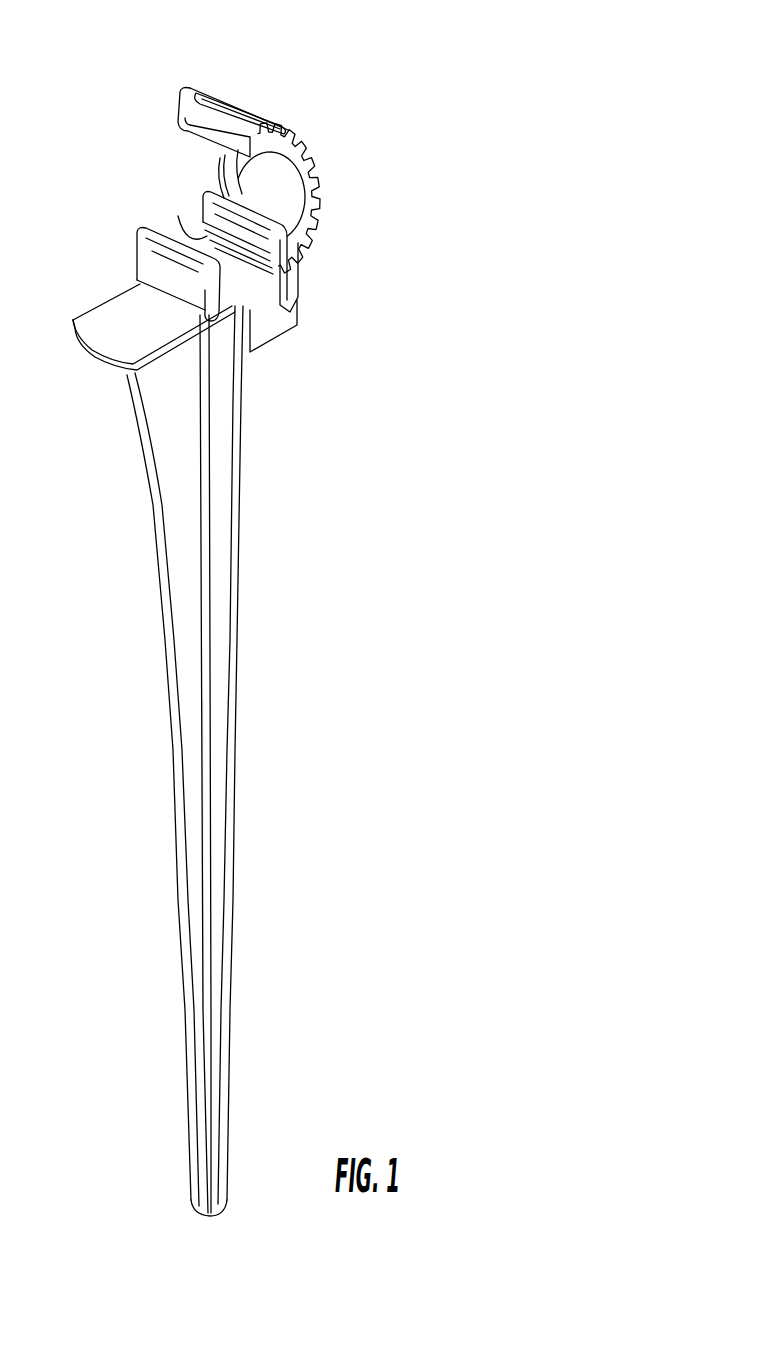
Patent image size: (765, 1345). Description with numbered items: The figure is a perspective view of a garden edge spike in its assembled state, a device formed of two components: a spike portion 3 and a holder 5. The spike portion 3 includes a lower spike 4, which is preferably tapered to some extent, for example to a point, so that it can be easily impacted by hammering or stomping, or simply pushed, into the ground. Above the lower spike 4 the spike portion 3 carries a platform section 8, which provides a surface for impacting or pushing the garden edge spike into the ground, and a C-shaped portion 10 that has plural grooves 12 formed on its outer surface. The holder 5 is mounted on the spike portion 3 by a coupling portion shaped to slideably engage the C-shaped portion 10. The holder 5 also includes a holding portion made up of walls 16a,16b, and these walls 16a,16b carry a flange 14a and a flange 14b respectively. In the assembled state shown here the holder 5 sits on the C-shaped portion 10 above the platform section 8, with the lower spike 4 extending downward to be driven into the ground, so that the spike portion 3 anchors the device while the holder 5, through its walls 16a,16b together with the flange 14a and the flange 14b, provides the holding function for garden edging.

The spike portion 3 is at (128, 464).
The lower spike 4 is at (222, 987).
The holder 5 is at (322, 292).
The platform section 8 is at (125, 326).
The C-shaped portion 10 is at (278, 183).
The grooves 12 is at (287, 132).
The flange 14a is at (145, 228).
The flange 14b is at (201, 197).
The walls 16a,16b is at (210, 287).